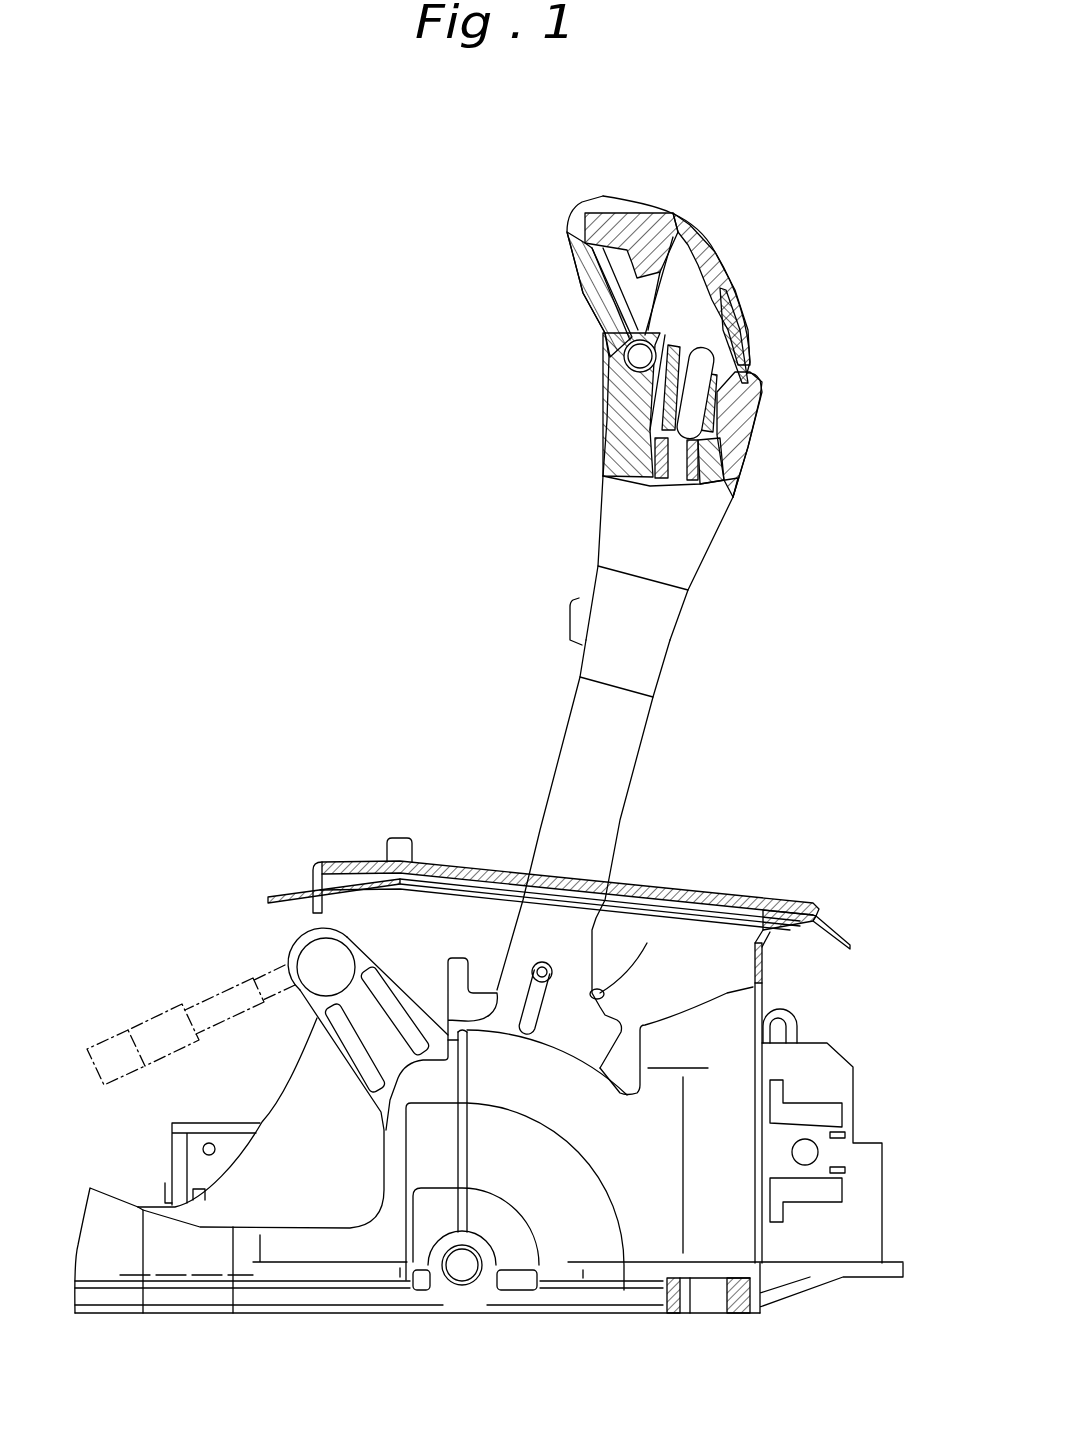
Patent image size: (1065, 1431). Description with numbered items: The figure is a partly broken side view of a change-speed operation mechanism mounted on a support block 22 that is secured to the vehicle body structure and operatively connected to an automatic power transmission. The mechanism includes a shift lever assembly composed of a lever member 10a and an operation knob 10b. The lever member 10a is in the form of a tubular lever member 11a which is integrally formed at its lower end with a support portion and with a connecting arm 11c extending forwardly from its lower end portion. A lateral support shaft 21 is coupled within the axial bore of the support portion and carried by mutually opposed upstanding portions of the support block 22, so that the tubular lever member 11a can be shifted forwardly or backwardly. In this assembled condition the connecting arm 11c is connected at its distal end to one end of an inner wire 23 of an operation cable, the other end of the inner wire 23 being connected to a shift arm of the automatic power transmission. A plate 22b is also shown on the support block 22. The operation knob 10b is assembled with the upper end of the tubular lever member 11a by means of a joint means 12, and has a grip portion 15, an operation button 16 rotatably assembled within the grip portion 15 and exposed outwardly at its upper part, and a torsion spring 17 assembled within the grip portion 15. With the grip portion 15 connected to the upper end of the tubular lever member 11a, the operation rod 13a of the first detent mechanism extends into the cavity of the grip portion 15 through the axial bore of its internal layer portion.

The lever member 10a is at (534, 797).
The operation knob 10b is at (733, 259).
The tubular lever member 11a is at (630, 729).
The connecting arm 11c is at (300, 950).
The joint means 12 is at (660, 640).
The operation rod 13a is at (703, 366).
The grip portion 15 is at (737, 444).
The operation button 16 is at (673, 227).
The torsion spring 17 is at (628, 326).
The lateral support shaft 21 is at (463, 1268).
The support block 22 is at (770, 998).
The cover plate 22b is at (647, 943).
The inner wire 23 is at (227, 1000).